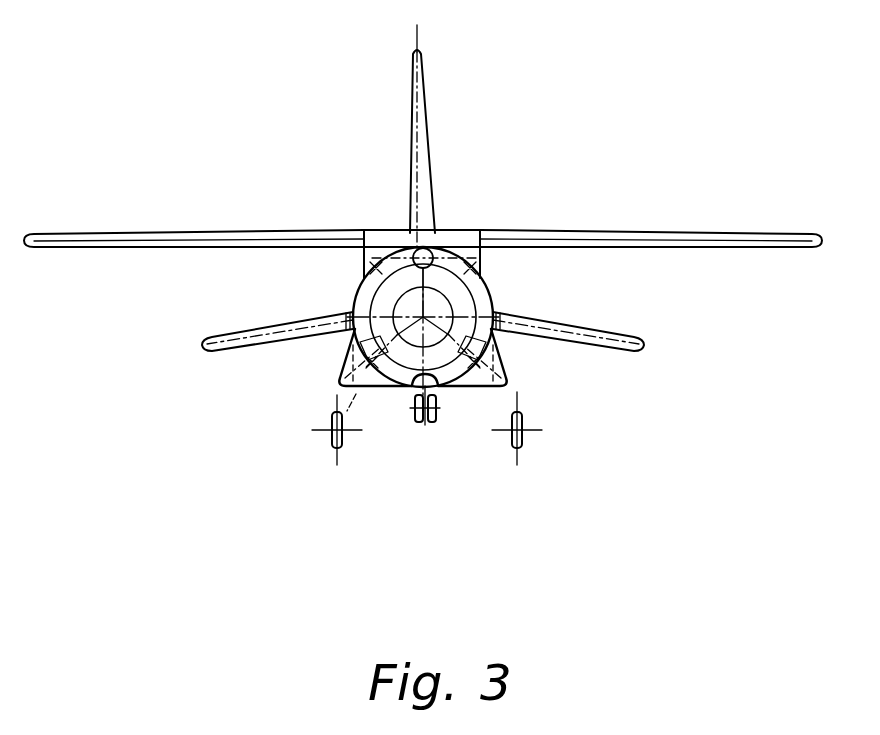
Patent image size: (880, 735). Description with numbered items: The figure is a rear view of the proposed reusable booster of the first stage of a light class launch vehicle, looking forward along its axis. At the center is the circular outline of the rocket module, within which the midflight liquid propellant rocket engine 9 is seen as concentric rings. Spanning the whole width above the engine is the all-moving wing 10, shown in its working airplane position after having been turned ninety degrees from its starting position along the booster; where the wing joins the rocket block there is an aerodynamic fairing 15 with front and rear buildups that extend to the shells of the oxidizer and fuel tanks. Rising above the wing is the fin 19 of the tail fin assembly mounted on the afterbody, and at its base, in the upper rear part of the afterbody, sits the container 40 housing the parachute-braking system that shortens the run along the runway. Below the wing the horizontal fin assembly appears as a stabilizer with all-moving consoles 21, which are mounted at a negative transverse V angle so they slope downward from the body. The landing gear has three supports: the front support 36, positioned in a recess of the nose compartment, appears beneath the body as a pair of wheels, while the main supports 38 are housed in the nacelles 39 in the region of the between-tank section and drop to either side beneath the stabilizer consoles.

The all-moving wing 10 is at (150, 232).
The aerodynamic fairing 15 is at (382, 252).
The fin 19 is at (417, 153).
The container 40 is at (423, 249).
The midflight liquid propellant rocket engine 9 is at (432, 302).
The all-moving consoles 21 is at (245, 354).
The nacelles 39 is at (477, 378).
The main supports 38 is at (333, 443).
The front support 36 is at (417, 423).